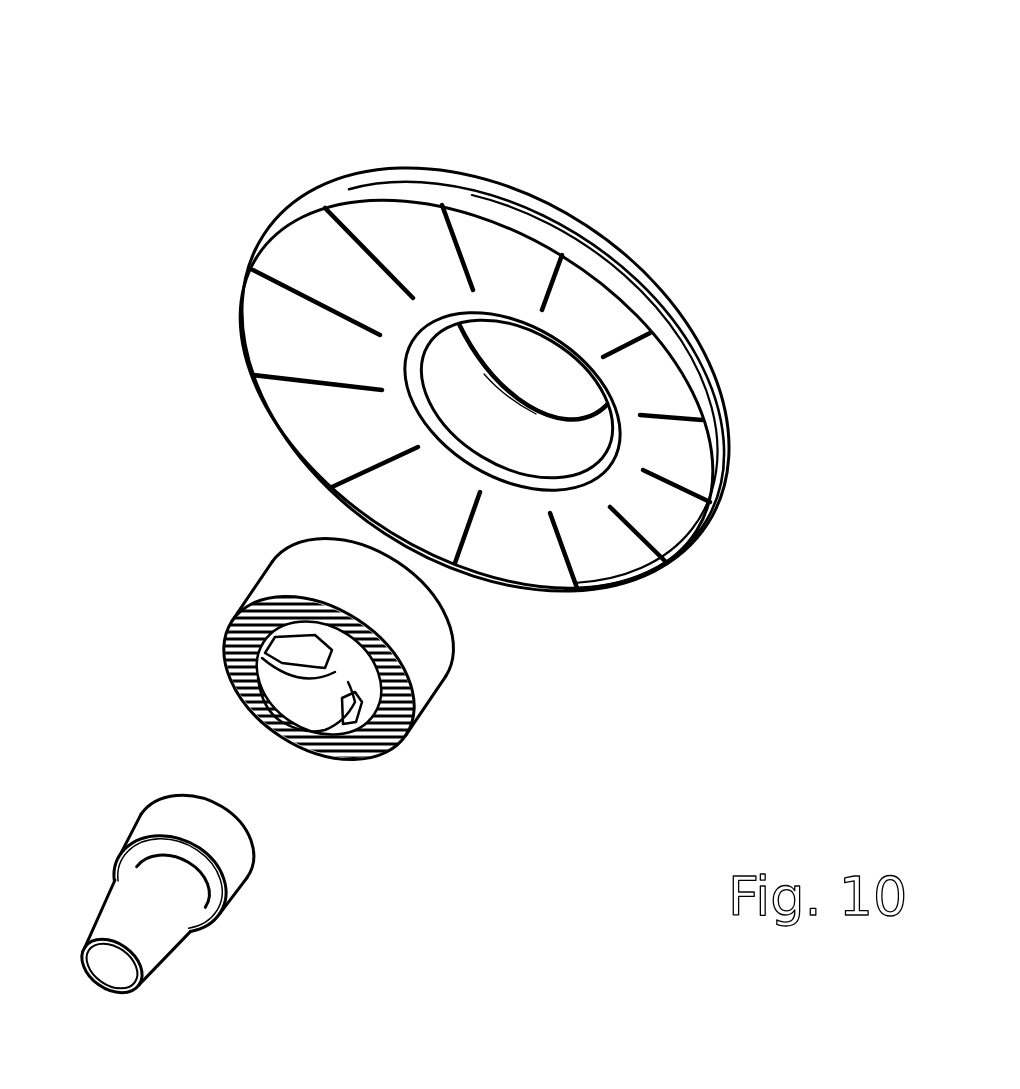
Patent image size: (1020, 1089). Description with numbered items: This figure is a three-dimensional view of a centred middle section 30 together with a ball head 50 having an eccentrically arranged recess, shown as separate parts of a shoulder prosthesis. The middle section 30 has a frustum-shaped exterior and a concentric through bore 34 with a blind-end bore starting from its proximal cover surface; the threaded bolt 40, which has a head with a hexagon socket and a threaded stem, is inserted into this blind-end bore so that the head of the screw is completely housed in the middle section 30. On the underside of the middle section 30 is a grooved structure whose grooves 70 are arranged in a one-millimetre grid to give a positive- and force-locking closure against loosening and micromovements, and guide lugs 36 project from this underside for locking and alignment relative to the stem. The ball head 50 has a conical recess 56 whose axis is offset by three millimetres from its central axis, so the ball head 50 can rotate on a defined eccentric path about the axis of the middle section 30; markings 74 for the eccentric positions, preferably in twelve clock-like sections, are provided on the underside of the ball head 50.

The ball head 50 is at (633, 265).
The markings 74 is at (448, 242).
The conical recess 56 is at (570, 448).
The middle section 30 is at (417, 643).
The through bore 34 is at (263, 682).
The grooves 70 is at (417, 725).
The guide lugs 36 is at (327, 768).
The threaded bolt 40 is at (230, 868).